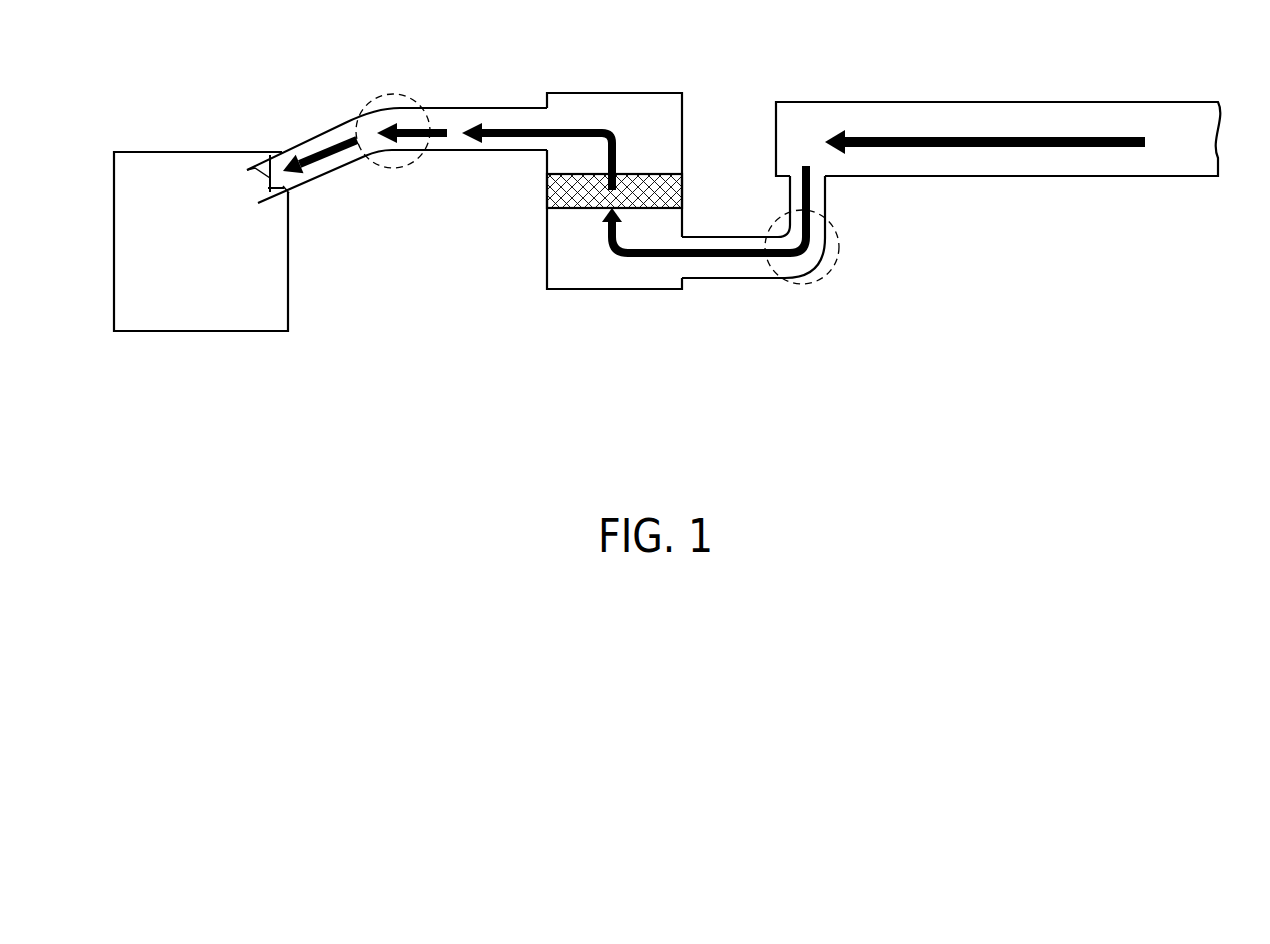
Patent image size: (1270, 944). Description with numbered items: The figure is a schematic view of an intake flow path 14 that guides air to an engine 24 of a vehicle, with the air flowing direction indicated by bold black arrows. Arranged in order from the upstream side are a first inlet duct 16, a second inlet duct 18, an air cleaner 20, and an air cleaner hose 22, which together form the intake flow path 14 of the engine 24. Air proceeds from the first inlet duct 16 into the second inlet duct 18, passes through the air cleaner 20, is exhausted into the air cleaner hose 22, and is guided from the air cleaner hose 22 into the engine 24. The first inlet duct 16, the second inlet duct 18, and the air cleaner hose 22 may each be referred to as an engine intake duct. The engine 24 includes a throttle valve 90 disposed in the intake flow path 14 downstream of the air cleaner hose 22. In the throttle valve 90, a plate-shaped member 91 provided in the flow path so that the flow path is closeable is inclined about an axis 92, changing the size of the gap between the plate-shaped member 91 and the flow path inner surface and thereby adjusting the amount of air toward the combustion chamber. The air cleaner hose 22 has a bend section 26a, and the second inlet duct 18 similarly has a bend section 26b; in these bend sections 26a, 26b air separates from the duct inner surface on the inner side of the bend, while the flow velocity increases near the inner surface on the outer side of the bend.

The intake flow path 14 is at (868, 110).
The first inlet duct 16 is at (1040, 178).
The second inlet duct 18 is at (725, 279).
The air cleaner 20 is at (600, 290).
The air cleaner hose 22 is at (482, 152).
The engine 24 is at (248, 332).
The bend section 26a is at (394, 168).
The bend section 26b is at (801, 284).
The throttle valve 90 is at (289, 193).
The plate-shaped member 91 is at (270, 155).
The axis 92 is at (255, 168).